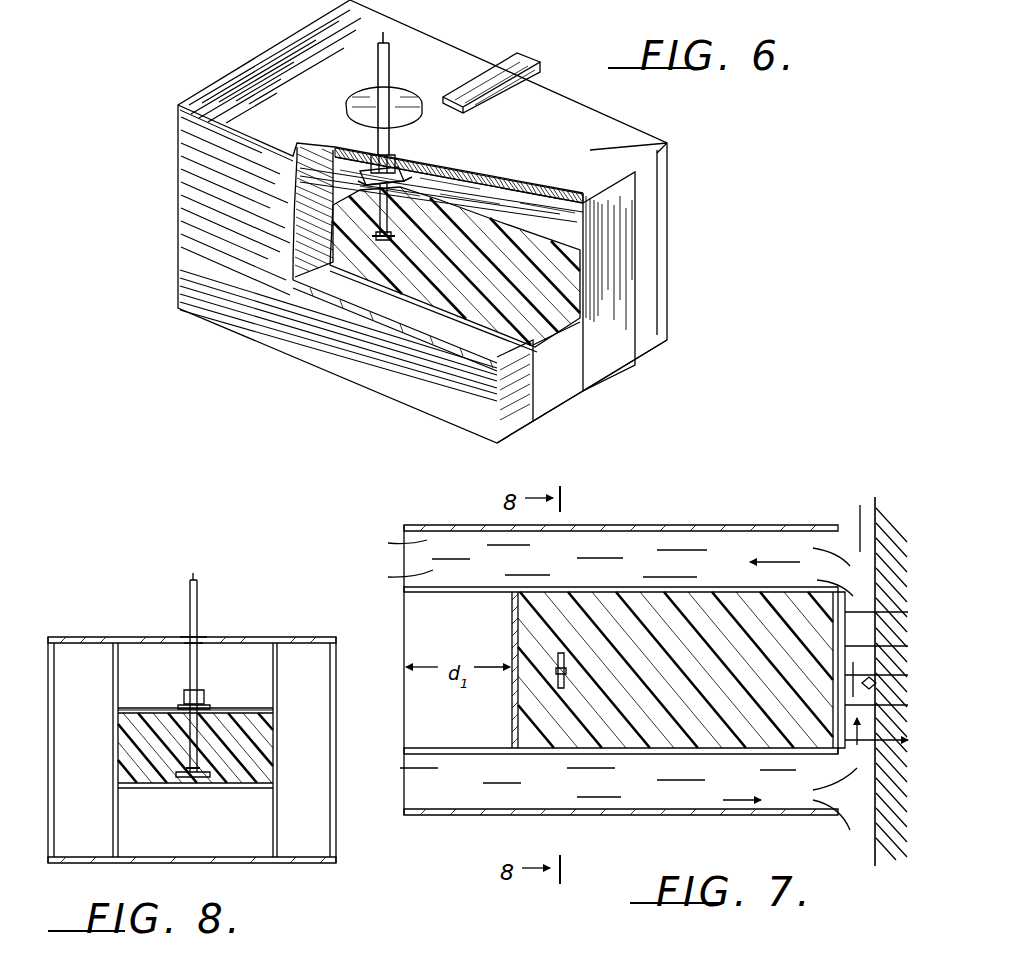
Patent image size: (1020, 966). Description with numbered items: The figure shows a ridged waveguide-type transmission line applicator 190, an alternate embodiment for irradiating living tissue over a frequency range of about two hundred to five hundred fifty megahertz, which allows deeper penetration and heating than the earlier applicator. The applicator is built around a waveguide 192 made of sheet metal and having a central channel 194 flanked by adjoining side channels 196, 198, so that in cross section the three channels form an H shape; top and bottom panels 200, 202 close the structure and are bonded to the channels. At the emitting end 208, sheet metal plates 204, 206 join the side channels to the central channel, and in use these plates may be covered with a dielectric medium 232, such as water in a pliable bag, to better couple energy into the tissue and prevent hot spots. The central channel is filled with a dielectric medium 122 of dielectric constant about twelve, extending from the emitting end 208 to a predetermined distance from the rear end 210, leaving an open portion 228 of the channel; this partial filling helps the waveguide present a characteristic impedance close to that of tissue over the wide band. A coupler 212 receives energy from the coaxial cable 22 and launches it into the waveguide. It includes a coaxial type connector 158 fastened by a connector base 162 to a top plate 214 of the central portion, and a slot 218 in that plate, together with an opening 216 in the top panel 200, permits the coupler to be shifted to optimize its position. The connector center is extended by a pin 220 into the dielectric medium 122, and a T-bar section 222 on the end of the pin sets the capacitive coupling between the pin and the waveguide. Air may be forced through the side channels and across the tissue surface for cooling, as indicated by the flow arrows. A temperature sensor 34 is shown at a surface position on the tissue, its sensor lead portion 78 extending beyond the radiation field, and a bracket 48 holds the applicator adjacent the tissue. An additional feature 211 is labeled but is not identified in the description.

In FIG. 6, the coaxial cable 22 is at (378, 72).
In FIG. 8, the coaxial cable 22 is at (199, 612).
In FIG. 7, the temperature sensor 34 is at (877, 686).
In FIG. 6, the bracket 48 is at (527, 40).
In FIG. 7, the sensor lead portion 78 is at (874, 850).
In FIG. 6, the dielectric medium 122 is at (500, 230).
In FIG. 8, the dielectric medium 122 is at (265, 766).
In FIG. 7, the dielectric medium 122 is at (520, 722).
In FIG. 6, the coaxial type connector 158 is at (367, 160).
In FIG. 8, the coaxial type connector 158 is at (206, 700).
In FIG. 6, the connector base 162 is at (396, 168).
In FIG. 6, the waveguide-type transmission line applicator 190 is at (572, 80).
In FIG. 6, the waveguide 192 is at (632, 139).
In FIG. 7, the waveguide 192 is at (833, 612).
In FIG. 6, the central channel 194 is at (630, 272).
In FIG. 8, the central channel 194 is at (250, 708).
In FIG. 7, the central channel 194 is at (676, 527).
In FIG. 6, the side channel 196 is at (497, 398).
In FIG. 8, the side channel 196 is at (52, 663).
In FIG. 7, the side channel 196 is at (617, 808).
In FIG. 6, the side channel 198 is at (665, 285).
In FIG. 8, the side channel 198 is at (336, 842).
In FIG. 6, the top panel 200 is at (580, 116).
In FIG. 8, the top panel 200 is at (240, 637).
In FIG. 7, the top panel 200 is at (621, 528).
In FIG. 6, the bottom panel 202 is at (505, 436).
In FIG. 8, the bottom panel 202 is at (245, 863).
In FIG. 7, the bottom panel 202 is at (621, 812).
In FIG. 6, the sheet metal plate 204 is at (606, 183).
In FIG. 7, the sheet metal plate 204 is at (836, 662).
In FIG. 6, the sheet metal plate 206 is at (655, 350).
In FIG. 6, the emitting end 208 is at (577, 410).
In FIG. 6, the rear end 210 is at (178, 222).
In FIG. 7, the rear end 210 is at (403, 722).
In FIG. 6, the opening 211 is at (690, 240).
In FIG. 6, the coupler 212 is at (455, 266).
In FIG. 8, the coupler 212 is at (195, 748).
In FIG. 7, the coupler 212 is at (675, 670).
In FIG. 6, the top plate 214 is at (498, 186).
In FIG. 8, the top plate 214 is at (170, 709).
In FIG. 6, the opening 216 is at (400, 93).
In FIG. 8, the opening 216 is at (181, 637).
In FIG. 6, the slot 218 is at (405, 181).
In FIG. 6, the pin 220 is at (363, 212).
In FIG. 8, the pin 220 is at (211, 741).
In FIG. 7, the pin 220 is at (566, 672).
In FIG. 6, the T-bar section 222 is at (385, 257).
In FIG. 8, the T-bar section 222 is at (221, 765).
In FIG. 7, the T-bar section 222 is at (564, 655).
In FIG. 7, the open portion 228 is at (425, 633).
In FIG. 6, the dielectric medium 232 is at (627, 212).
In FIG. 7, the dielectric medium 232 is at (843, 626).